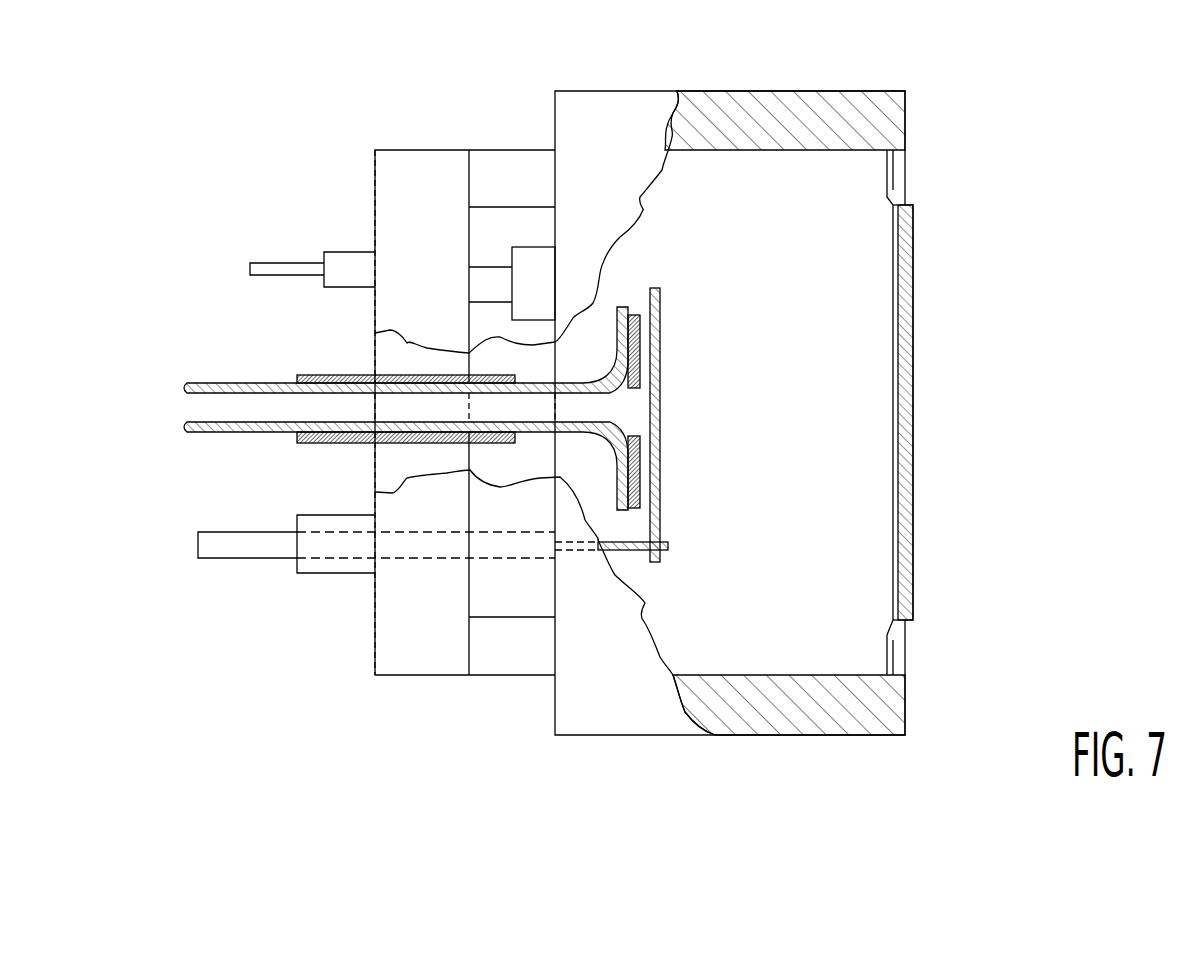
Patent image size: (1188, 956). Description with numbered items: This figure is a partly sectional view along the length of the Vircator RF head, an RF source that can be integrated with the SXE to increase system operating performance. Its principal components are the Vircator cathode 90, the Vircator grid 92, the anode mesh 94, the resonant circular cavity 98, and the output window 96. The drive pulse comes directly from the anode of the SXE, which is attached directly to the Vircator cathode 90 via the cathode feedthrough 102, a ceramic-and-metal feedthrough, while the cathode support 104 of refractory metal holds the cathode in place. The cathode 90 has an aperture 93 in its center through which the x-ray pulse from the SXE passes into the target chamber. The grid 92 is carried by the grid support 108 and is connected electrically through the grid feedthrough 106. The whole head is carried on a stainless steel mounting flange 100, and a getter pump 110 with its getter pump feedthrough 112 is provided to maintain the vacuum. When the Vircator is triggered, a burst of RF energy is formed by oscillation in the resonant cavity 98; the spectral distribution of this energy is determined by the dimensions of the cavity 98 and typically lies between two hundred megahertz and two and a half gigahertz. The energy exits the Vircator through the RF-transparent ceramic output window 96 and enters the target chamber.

The Vircator cathode 90 is at (635, 316).
The Vircator grid 92 is at (663, 478).
The aperture in Vircator cathode 93 is at (633, 412).
The anode mesh 94 is at (893, 178).
The output window 96 is at (912, 283).
The resonant circular cavity 98 is at (773, 180).
The mounting flange 100 is at (483, 647).
The cathode feedthrough 102 is at (345, 378).
The cathode support 104 is at (583, 423).
The grid feedthrough 106 is at (312, 575).
The grid support 108 is at (623, 548).
The getter pump 110 is at (337, 260).
The getter pump feedthrough 112 is at (529, 257).